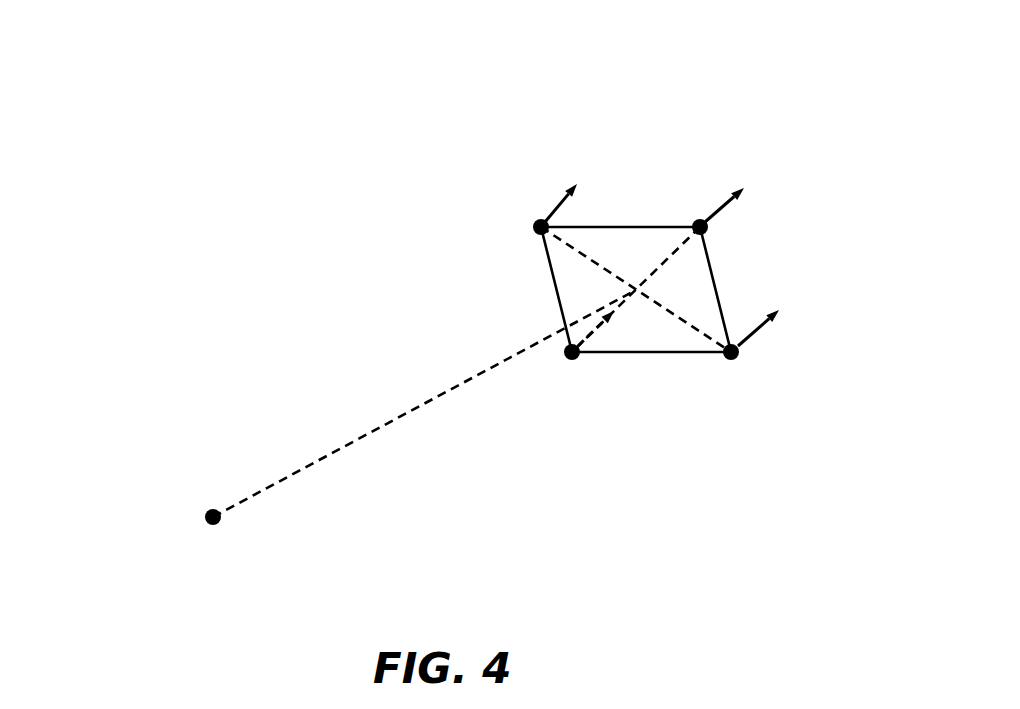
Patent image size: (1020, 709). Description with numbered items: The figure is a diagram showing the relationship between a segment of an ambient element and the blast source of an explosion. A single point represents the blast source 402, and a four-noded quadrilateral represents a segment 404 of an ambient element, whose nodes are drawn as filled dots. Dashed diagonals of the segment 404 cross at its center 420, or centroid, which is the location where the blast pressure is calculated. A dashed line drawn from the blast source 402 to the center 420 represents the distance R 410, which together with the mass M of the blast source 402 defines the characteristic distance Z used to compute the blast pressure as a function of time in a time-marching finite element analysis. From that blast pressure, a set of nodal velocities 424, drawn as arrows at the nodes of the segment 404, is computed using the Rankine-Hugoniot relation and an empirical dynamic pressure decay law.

The blast source 402 is at (205, 518).
The segment 404 is at (678, 350).
The distance R 410 is at (398, 413).
The center 420 is at (636, 292).
The nodal velocities 424 is at (608, 173).